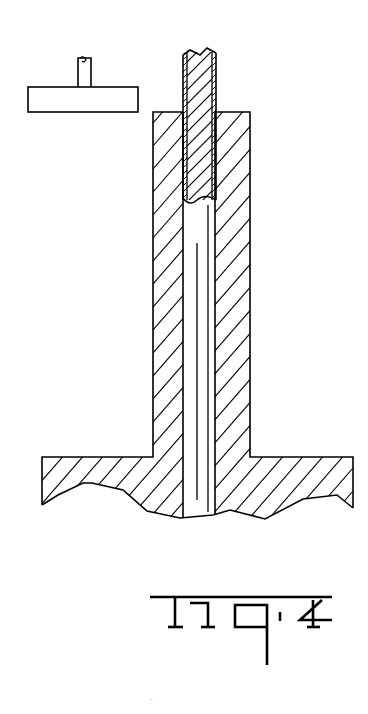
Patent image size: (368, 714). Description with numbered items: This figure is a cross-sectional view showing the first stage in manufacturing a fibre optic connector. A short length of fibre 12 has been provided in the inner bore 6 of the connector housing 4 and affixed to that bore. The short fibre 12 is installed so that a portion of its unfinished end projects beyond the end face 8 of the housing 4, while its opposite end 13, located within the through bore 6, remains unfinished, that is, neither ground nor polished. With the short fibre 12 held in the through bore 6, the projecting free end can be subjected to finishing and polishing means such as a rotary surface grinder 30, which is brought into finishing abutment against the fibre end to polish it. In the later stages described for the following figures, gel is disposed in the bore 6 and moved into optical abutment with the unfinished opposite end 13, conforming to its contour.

The connector housing 4 is at (162, 340).
The inner bore 6 is at (213, 362).
The end face 8 is at (233, 112).
The short length of fibre 12 is at (200, 162).
The opposite end 13 is at (196, 201).
The rotary surface grinder 30 is at (97, 118).